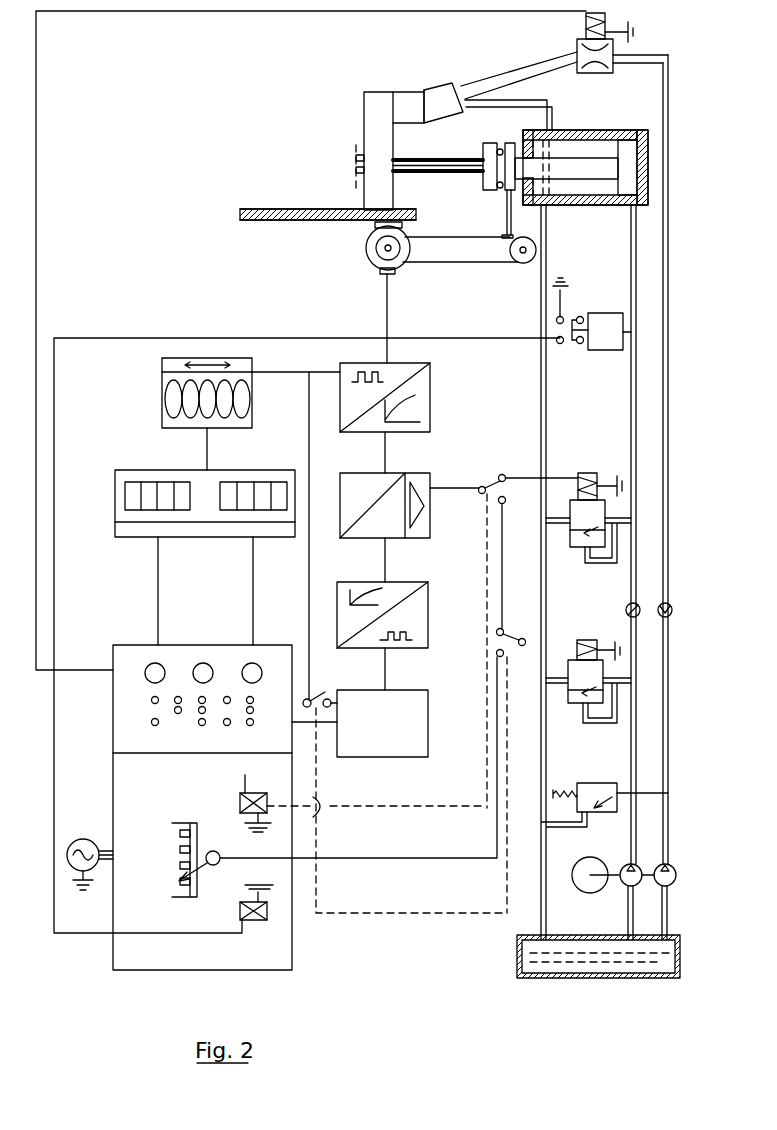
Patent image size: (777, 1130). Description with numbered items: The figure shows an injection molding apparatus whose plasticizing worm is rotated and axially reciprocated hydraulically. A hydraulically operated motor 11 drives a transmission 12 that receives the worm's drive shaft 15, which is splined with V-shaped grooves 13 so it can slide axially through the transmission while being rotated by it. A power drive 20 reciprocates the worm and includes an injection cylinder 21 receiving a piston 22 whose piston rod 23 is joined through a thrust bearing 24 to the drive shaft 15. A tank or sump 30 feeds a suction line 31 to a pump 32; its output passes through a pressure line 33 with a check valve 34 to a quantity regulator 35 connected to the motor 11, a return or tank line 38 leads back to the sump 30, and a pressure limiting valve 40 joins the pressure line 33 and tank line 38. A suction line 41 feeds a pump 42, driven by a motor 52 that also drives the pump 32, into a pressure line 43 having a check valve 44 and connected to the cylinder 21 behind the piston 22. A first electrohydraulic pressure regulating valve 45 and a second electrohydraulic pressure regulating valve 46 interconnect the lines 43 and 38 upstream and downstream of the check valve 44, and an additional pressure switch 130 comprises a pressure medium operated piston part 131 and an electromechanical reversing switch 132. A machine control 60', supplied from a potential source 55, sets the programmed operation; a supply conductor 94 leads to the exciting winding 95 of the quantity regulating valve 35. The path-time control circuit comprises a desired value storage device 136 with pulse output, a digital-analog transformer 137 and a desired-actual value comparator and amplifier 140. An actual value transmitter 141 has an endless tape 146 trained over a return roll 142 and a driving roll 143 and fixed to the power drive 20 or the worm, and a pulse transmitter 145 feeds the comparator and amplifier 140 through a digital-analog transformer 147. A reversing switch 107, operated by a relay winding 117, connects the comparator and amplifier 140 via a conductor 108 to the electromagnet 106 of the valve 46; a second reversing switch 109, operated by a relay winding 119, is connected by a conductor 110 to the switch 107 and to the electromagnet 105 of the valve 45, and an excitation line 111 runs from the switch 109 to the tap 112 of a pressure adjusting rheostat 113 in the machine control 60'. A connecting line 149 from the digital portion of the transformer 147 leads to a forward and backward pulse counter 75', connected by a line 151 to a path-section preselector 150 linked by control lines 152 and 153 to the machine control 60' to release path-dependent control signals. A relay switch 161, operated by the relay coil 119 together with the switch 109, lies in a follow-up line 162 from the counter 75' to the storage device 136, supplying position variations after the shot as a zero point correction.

The hydraulically operated motor 11 is at (437, 94).
The transmission 12 is at (372, 96).
The V-shaped grooves 13 is at (447, 159).
The drive shaft 15 is at (350, 165).
The power drive 20 is at (561, 117).
The injection cylinder 21 is at (596, 206).
The piston 22 is at (630, 142).
The piston rod 23 is at (586, 165).
The pressure or thrust bearing 24 is at (509, 136).
The tank or sump 30 is at (516, 960).
The suction line 31 is at (663, 926).
The pump 32 is at (657, 866).
The pressure line 33 is at (662, 672).
The check valve 34 is at (662, 607).
The quantity regulator 35 is at (607, 72).
The return or tank line 38 is at (548, 240).
The pressure limiting valve 40 is at (591, 778).
The suction line 41 is at (628, 926).
The pump 42 is at (624, 866).
The pressure line 43 is at (631, 758).
The check valve 44 is at (626, 610).
The first electrohydraulic pressure regulating valve 45 is at (570, 712).
The second electro-hydraulic pressure regulating valve 46 is at (573, 548).
The motor 52 is at (578, 862).
The source of electric potential 55 is at (90, 837).
The machine control 60' is at (177, 823).
The forward and backward pulse counter 75' is at (182, 393).
The supply conductor 94 is at (273, 11).
The exciting winding 95 is at (606, 16).
The operating electromagnet 105 is at (590, 638).
The operating electromagnet 106 is at (590, 472).
The Rotation-Shot reversing switch 107 is at (494, 470).
The conductor 108 is at (559, 478).
The Shot/Rotation-Afterpressure reversing switch 109 is at (522, 622).
The conductor 110 is at (503, 566).
The excitation line 111 is at (408, 862).
The tap 112 is at (206, 856).
The pressure adjusting rheostat 113 is at (178, 861).
The relay winding 117 is at (240, 800).
The relay winding 119 is at (256, 922).
The pressure switch 130 is at (617, 356).
The pressure medium operated piston part 131 is at (598, 316).
The electromechanical reversing switch 132 is at (564, 344).
The desired value storage device 136 is at (437, 732).
The digital-analog transformer 137 is at (437, 623).
The desired-actual value comparator and amplifier 140 is at (462, 542).
The actual value transmitter 141 is at (450, 276).
The return roll 142 is at (528, 262).
The driving roll 143 is at (378, 258).
The pulse transmitter 145 is at (367, 250).
The endless tape 146 is at (455, 236).
The digital-analog transformer 147 is at (439, 399).
The connecting line 149 is at (320, 352).
The path-section preselector 150 is at (150, 460).
The conductor or line 151 is at (210, 450).
The control line 152 is at (252, 588).
The control line 153 is at (172, 583).
The relay switch 161 is at (322, 701).
The follow-up line 162 is at (310, 583).